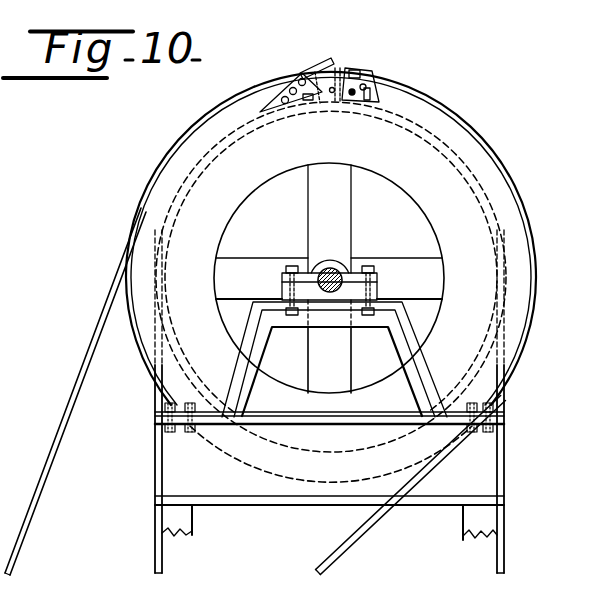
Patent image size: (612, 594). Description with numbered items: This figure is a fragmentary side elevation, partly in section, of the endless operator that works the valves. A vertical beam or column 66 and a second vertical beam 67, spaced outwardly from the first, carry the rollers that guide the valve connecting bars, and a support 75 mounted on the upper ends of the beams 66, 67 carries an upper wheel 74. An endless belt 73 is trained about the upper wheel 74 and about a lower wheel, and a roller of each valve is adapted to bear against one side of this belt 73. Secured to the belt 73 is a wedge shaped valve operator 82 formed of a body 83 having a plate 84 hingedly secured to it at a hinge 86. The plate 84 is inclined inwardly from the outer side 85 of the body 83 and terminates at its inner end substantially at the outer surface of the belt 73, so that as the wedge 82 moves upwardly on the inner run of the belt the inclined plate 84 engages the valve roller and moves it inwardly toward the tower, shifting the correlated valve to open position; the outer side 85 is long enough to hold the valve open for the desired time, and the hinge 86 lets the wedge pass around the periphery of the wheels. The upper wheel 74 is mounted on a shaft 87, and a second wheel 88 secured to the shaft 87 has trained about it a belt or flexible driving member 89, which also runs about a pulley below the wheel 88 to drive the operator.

The vertical beam 66 is at (463, 527).
The second vertical beam 67 is at (193, 530).
The endless belt 73 is at (430, 136).
The upper wheel 74 is at (477, 262).
The support 75 is at (423, 354).
The wedge shaped valve operator 82 is at (319, 56).
The body 83 is at (343, 74).
The plate 84 is at (276, 97).
The outer side 85 is at (372, 70).
The hinge 86 is at (320, 97).
The shaft 87 is at (336, 268).
The second wheel 88 is at (497, 198).
The flexible driving member 89 is at (96, 333).